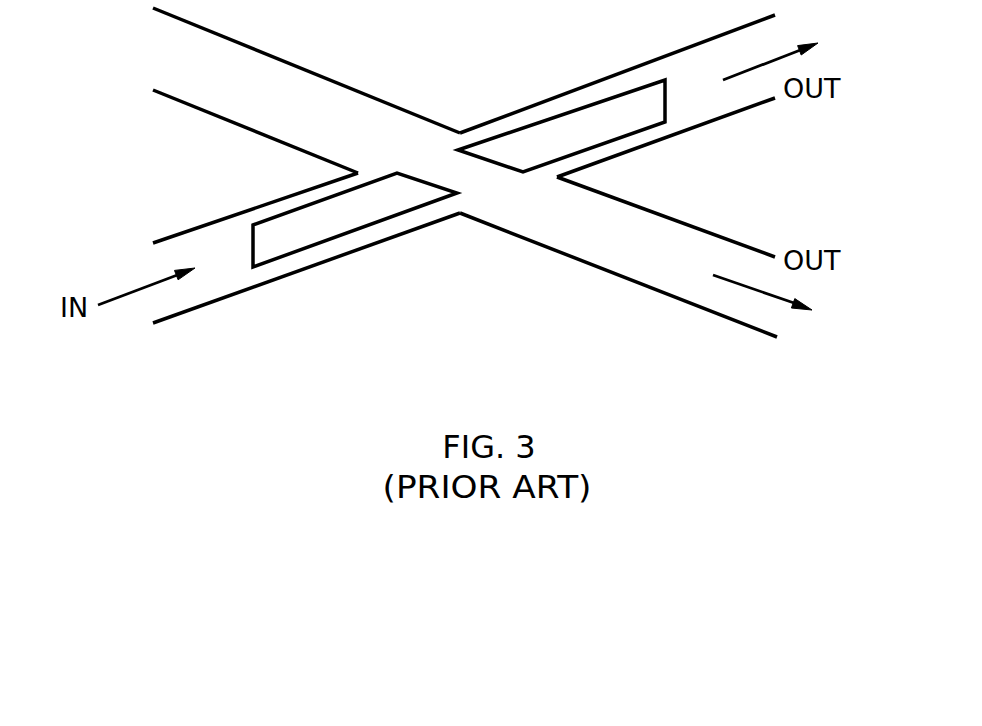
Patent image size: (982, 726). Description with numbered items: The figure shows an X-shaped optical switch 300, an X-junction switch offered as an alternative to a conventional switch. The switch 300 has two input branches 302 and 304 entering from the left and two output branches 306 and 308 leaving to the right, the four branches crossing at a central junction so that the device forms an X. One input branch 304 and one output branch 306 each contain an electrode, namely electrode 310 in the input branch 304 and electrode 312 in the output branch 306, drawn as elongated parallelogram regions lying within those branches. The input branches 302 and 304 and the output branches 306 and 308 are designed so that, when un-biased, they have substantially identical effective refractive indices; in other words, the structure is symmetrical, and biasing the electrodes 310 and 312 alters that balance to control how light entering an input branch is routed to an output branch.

The X-shaped optical switch 300 is at (498, 293).
The input branch 302 is at (310, 70).
The input branch 304 is at (202, 306).
The output branch 306 is at (720, 118).
The output branch 308 is at (687, 303).
The electrode 310 is at (322, 232).
The electrode 312 is at (522, 138).